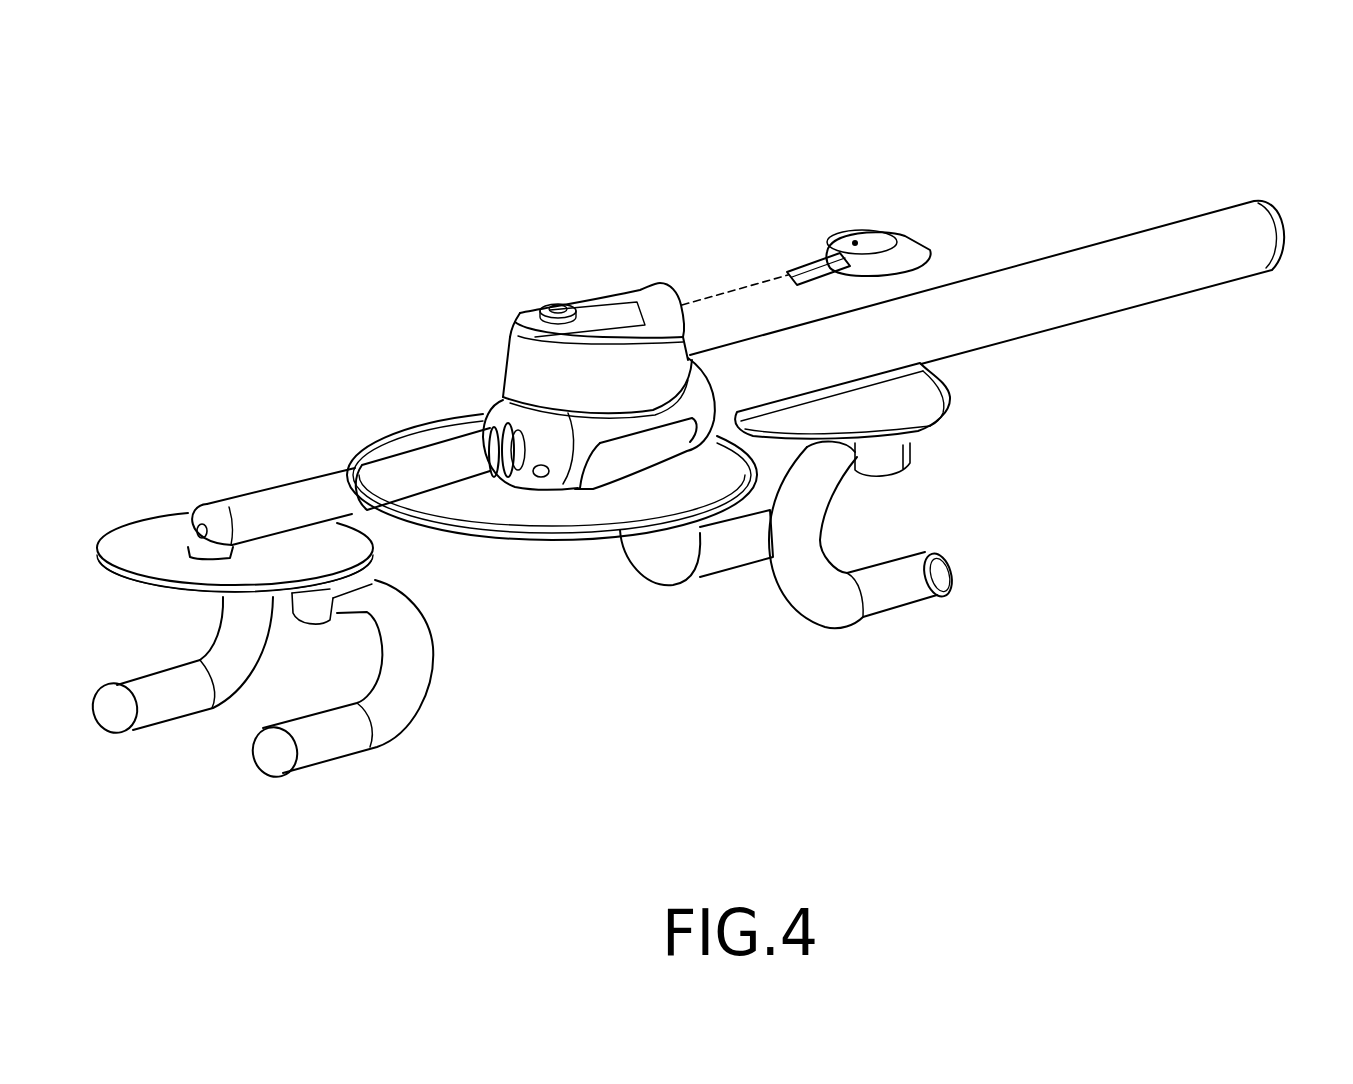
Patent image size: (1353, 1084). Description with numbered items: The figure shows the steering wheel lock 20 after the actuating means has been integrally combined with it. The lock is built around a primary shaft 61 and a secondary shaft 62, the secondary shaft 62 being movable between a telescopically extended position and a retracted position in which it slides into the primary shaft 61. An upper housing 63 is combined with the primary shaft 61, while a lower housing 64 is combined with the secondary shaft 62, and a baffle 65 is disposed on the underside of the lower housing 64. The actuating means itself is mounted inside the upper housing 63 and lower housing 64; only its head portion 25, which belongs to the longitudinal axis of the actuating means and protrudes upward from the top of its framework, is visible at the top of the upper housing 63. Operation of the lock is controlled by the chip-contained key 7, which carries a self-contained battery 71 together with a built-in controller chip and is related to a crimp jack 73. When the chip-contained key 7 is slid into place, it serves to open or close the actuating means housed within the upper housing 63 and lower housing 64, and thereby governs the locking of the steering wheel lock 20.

The steering wheel lock 20 is at (685, 428).
The chip-contained key 7 is at (859, 206).
The self-contained battery 71 is at (900, 227).
The crimp jack 73 is at (790, 273).
The head portion 25 is at (553, 303).
The primary shaft 61 is at (397, 477).
The secondary shaft 62 is at (1063, 272).
The upper housing 63 is at (577, 282).
The lower housing 64 is at (637, 453).
The baffle 65 is at (538, 510).